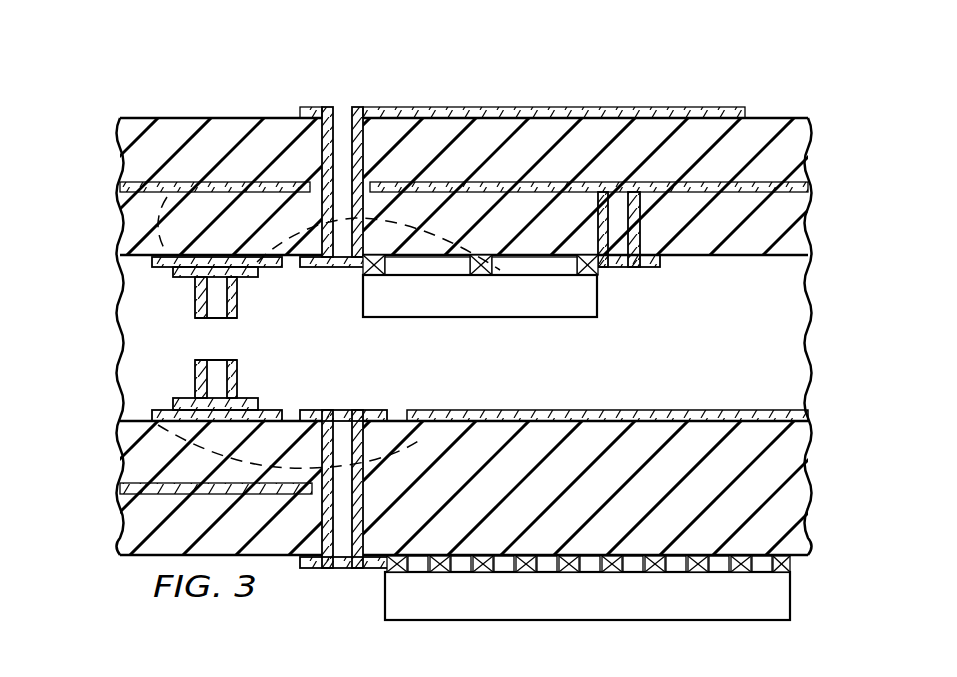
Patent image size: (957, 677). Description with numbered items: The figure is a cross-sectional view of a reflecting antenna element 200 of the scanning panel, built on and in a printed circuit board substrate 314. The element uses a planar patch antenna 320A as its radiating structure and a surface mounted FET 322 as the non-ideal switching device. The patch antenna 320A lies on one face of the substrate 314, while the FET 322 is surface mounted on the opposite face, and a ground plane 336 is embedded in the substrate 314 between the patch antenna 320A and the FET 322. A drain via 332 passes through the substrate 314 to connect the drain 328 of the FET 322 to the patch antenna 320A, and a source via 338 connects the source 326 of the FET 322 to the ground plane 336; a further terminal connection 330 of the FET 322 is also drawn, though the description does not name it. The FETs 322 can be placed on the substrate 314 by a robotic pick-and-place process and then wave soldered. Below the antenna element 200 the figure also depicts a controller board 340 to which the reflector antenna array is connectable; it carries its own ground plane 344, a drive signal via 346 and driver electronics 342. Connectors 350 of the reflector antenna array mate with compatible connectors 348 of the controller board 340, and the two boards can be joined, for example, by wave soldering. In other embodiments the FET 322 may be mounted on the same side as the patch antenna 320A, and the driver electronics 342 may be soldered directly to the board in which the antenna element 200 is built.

The antenna element 200 is at (92, 443).
The printed circuit board substrate 314 is at (120, 153).
The planar patch antenna 320A is at (315, 107).
The surface mounted FET 322 is at (362, 299).
The source 326 is at (598, 268).
The drain 328 is at (362, 270).
The interconnect 330 is at (493, 267).
The drain via 332 is at (318, 138).
The ground plane 336 is at (122, 187).
The source via 338 is at (596, 232).
The controller board 340 is at (685, 398).
The driver electronics 342 is at (790, 598).
The ground plane 344 is at (810, 415).
The drive signal via 346 is at (340, 412).
The connectors 348 is at (195, 380).
The connectors 350 is at (195, 300).